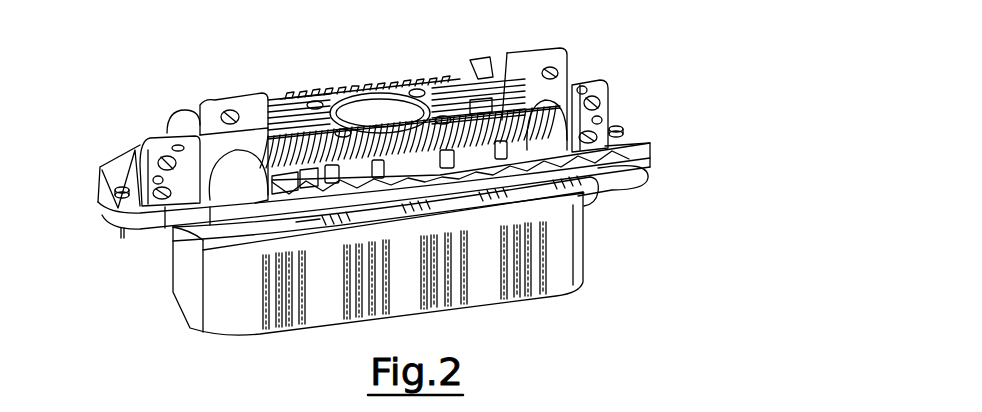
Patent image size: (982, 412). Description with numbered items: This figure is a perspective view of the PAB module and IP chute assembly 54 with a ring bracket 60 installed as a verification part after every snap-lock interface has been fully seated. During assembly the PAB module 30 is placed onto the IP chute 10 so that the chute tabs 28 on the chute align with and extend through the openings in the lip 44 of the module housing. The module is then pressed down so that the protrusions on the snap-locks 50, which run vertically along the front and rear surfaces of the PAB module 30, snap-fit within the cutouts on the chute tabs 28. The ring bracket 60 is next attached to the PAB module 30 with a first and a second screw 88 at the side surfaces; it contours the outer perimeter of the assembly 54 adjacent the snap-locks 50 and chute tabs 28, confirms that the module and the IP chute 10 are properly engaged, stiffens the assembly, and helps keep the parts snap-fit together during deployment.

The IP chute 10 is at (568, 262).
The chute tabs 28 is at (282, 178).
The PAB module 30 is at (604, 92).
The lip 44 is at (296, 230).
The snap-locks 50 is at (282, 186).
The PAB module and IP chute assembly 54 is at (585, 37).
The ring bracket 60 is at (650, 152).
The screws 88 is at (612, 130).